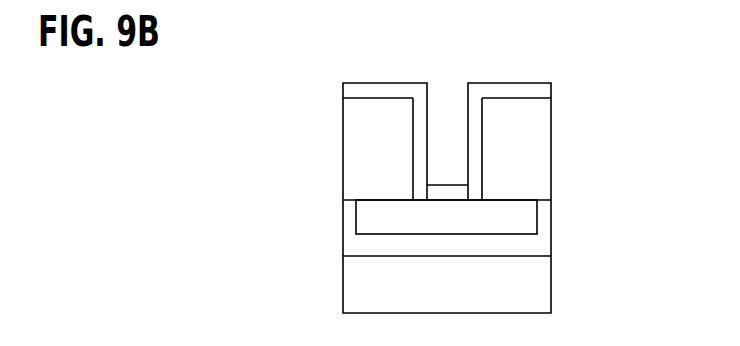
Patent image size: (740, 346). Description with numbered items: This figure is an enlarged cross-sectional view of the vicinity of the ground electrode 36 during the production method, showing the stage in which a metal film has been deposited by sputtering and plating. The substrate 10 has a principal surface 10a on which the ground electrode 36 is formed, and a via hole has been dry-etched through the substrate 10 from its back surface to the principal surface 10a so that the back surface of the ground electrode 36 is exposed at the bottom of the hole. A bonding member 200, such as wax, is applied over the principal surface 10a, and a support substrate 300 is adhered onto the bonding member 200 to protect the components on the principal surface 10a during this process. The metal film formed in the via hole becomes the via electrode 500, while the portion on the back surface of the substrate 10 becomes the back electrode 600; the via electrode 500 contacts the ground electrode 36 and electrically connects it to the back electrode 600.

The substrate 10 is at (360, 153).
The principal surface 10a is at (388, 200).
The ground electrode 36 is at (535, 215).
The bonding member 200 is at (360, 246).
The support substrate 300 is at (537, 287).
The via electrode 500 is at (450, 192).
The back electrode 600 is at (552, 91).